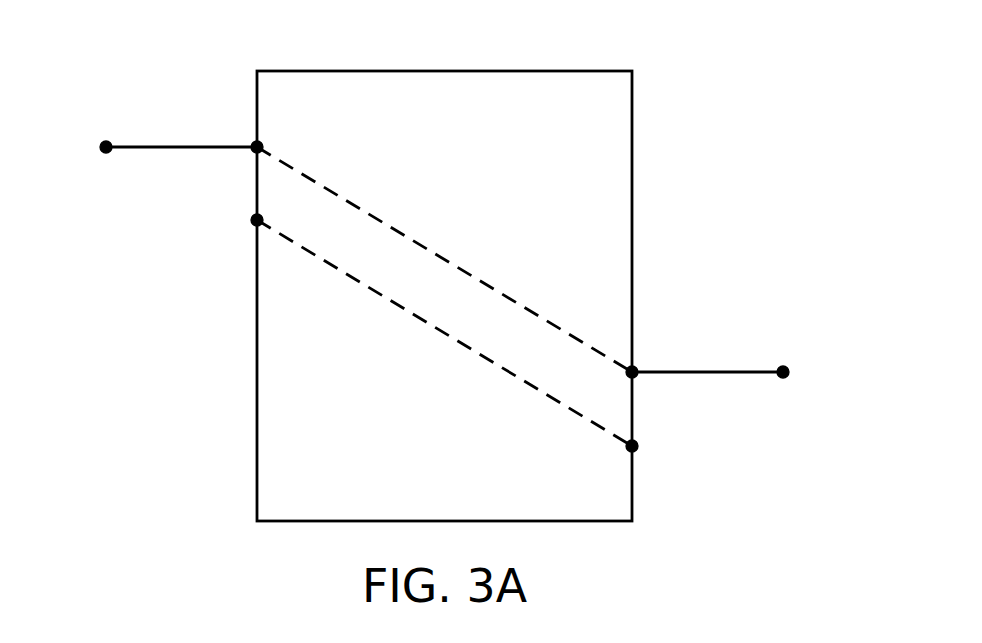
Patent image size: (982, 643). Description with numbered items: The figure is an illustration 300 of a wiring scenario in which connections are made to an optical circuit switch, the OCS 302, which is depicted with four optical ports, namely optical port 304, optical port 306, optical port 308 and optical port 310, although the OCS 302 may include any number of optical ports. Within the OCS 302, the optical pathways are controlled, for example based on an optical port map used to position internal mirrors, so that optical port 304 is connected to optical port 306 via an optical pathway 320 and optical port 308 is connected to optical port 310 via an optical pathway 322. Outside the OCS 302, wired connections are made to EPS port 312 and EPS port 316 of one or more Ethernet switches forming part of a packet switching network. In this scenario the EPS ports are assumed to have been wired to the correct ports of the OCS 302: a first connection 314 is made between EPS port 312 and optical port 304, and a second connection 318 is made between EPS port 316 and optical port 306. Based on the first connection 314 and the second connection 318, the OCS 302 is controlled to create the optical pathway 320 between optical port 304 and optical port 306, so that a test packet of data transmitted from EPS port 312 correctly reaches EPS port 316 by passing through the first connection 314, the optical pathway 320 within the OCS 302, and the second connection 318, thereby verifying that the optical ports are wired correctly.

The illustration 300 is at (764, 143).
The OCS 302 is at (595, 92).
The optical port 304 is at (262, 147).
The optical port 306 is at (632, 372).
The optical port 308 is at (255, 221).
The optical port 310 is at (632, 447).
The EPS port 312 is at (110, 153).
The first connection 314 is at (162, 146).
The EPS port 316 is at (786, 380).
The second connection 318 is at (728, 372).
The optical pathway 320 is at (443, 258).
The optical pathway 322 is at (421, 320).